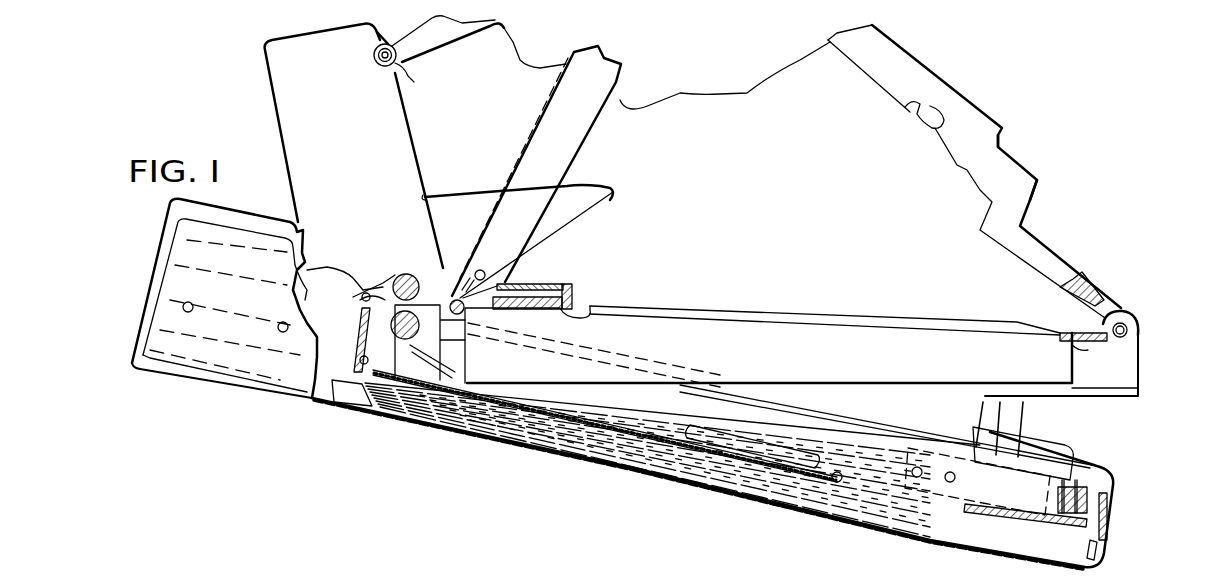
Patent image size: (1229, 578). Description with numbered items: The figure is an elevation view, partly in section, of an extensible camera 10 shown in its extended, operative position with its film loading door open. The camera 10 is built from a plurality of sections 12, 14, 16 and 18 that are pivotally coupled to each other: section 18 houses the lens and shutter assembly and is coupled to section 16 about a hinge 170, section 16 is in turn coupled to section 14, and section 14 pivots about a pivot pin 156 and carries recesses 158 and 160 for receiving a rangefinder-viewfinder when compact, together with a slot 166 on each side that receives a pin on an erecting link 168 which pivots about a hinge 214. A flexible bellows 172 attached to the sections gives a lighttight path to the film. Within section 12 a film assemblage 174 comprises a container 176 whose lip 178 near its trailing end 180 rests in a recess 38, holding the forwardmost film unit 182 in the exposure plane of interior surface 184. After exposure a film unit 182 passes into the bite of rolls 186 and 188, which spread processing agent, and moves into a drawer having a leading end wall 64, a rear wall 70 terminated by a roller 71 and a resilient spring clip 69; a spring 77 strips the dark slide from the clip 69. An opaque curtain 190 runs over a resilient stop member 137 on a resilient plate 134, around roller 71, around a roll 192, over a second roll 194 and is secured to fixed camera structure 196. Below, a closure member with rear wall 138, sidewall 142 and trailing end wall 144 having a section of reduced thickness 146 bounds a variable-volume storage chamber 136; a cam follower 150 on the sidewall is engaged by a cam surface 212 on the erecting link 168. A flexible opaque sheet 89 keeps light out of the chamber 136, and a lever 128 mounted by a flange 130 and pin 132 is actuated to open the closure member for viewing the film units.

The camera 10 is at (990, 83).
The section 12 is at (636, 482).
The section 14 is at (1030, 153).
The section 16 is at (398, 18).
The section 18 is at (262, 102).
The recess 38 is at (1080, 349).
The leading end wall 64 is at (356, 330).
The resilient spring clip 69 is at (553, 386).
The rear wall 70 is at (637, 423).
The roller 71 is at (835, 481).
The spring 77 is at (462, 368).
The flexible, opaque sheet 89 is at (196, 379).
The lever 128 is at (1114, 500).
The flange 130 is at (1102, 470).
The pin 132 is at (1112, 482).
The resilient plate 134 is at (950, 540).
The storage chamber 136 is at (512, 425).
The resilient stop member 137 is at (345, 395).
The rear wall 138 is at (675, 487).
The sidewall 142 is at (235, 385).
The trailing end wall 144 is at (1098, 568).
The section of reduced thickness 146 is at (1104, 542).
The cam follower 150 is at (478, 324).
The pivot pin 156 is at (1132, 314).
The recess 158 is at (1003, 133).
The recess 160 is at (1032, 200).
The slot 166 is at (905, 112).
The erecting link 168 is at (585, 130).
The hinge 170 is at (408, 80).
The flexible bellows 172 is at (716, 176).
The film assemblage 174 is at (862, 306).
The container 176 is at (722, 318).
The lip 178 is at (1062, 322).
The trailing end 180 is at (1139, 388).
The film unit 182 is at (540, 387).
The interior surface 184 is at (585, 306).
The roll 186 is at (410, 272).
The roll 188 is at (455, 338).
The curtain 190 is at (670, 433).
The roll 192 is at (350, 400).
The roll 194 is at (378, 290).
The fixed camera structure 196 is at (380, 272).
The cam surface 212 is at (510, 283).
The hinge 214 is at (488, 272).